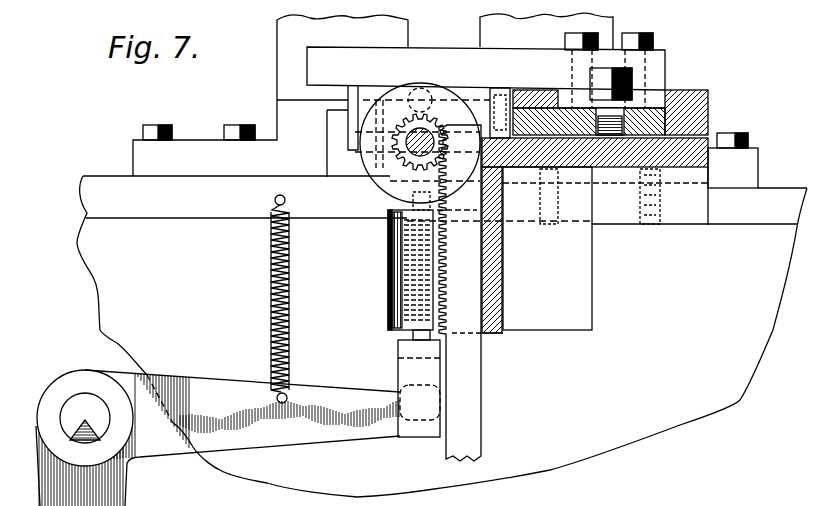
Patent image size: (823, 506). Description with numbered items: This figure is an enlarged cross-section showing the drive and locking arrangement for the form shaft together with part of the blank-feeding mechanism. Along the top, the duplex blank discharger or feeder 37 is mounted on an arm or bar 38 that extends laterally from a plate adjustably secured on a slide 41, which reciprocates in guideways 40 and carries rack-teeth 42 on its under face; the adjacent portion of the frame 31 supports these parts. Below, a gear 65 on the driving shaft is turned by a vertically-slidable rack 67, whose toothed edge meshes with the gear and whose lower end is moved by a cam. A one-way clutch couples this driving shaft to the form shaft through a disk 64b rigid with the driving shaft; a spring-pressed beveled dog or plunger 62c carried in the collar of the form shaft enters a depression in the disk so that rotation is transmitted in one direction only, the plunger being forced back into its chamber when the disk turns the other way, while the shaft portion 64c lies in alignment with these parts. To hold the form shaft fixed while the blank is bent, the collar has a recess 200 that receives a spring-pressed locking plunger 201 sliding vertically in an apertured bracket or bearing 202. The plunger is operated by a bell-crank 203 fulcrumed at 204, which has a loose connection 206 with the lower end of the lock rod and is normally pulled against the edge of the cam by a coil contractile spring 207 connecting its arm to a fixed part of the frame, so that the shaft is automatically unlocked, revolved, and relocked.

The raised housing body 31 is at (540, 24).
The duplex blank discharger or feeder 37 is at (395, 96).
The arm or bar 38 is at (486, 70).
The guideways 40 is at (528, 92).
The slide 41 is at (673, 89).
The rack-teeth 42 is at (613, 165).
The spring-pressed beveled dog or plunger 62c is at (420, 86).
The shaft 64c is at (437, 93).
The disk 64b is at (400, 160).
The gear 65 is at (405, 172).
The vertically-slidable rack 67 is at (467, 381).
The recess 200 is at (388, 220).
The spring-pressed locking plunger 201 is at (388, 232).
The apertured bracket or bearing 202 is at (388, 286).
The bell-crank 203 is at (223, 386).
The fulcrum 204 is at (75, 408).
The loose connection 206 is at (420, 404).
The coil contractile spring 207 is at (293, 353).